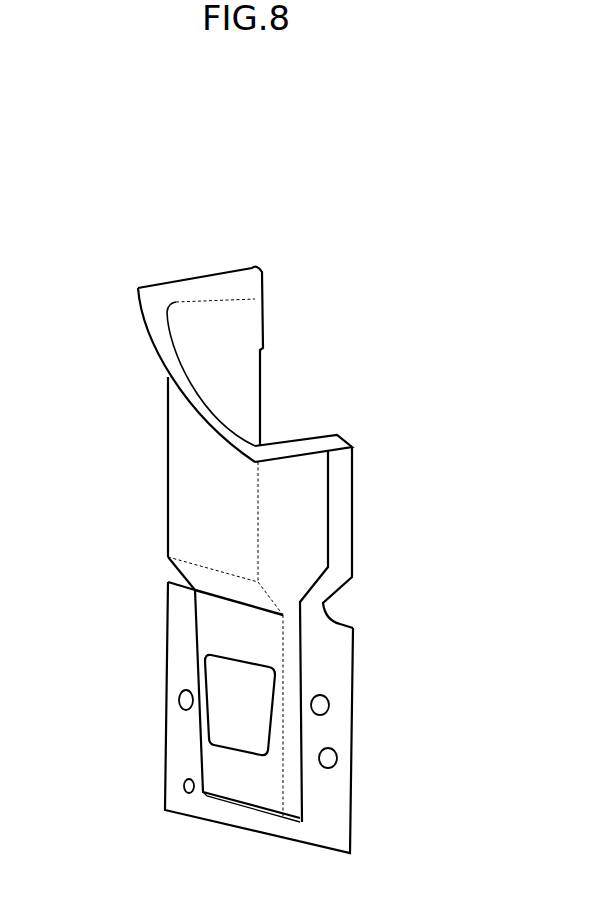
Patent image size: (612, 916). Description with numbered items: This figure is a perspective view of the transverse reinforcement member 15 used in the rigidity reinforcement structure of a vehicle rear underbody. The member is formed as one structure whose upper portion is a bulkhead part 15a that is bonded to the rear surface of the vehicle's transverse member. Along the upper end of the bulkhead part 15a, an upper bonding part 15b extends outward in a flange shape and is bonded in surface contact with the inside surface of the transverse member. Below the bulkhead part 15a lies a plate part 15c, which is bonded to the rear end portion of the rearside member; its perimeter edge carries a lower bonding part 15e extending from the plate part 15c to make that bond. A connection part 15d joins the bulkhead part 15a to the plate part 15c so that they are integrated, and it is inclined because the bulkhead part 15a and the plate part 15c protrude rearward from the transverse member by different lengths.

The transverse reinforcement member 15 is at (374, 398).
The bulkhead part 15a is at (183, 498).
The upper bonding part 15b is at (200, 292).
The plate part 15c is at (207, 755).
The connection part 15d is at (225, 583).
The lower bonding part 15e is at (330, 808).